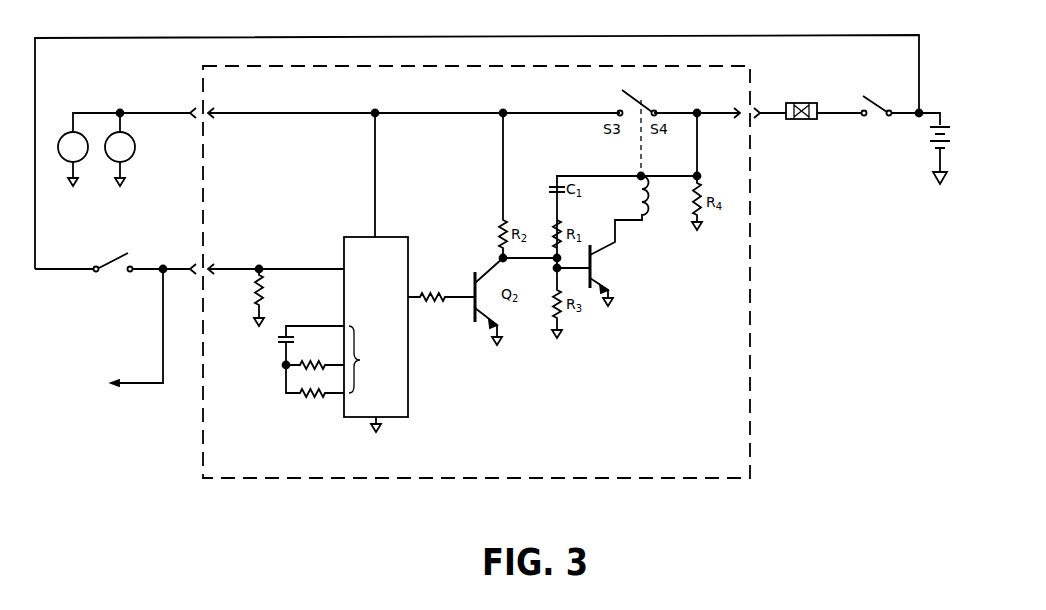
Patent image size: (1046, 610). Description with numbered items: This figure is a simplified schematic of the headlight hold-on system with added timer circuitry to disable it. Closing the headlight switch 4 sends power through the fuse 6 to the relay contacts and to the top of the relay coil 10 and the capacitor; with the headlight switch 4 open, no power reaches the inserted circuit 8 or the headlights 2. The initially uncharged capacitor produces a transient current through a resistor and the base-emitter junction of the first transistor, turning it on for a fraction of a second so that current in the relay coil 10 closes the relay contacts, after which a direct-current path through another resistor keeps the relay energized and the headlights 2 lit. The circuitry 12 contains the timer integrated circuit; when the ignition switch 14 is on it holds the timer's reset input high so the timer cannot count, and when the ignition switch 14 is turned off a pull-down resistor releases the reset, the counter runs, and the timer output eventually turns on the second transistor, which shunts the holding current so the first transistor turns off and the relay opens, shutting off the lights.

The headlights 2 is at (101, 178).
The headlight switch 4 is at (878, 102).
The fuse 6 is at (803, 103).
The inserted circuit 8 is at (640, 258).
The relay coil 10 is at (655, 213).
The circuitry 12 is at (425, 342).
The ignition switch 14 is at (101, 262).